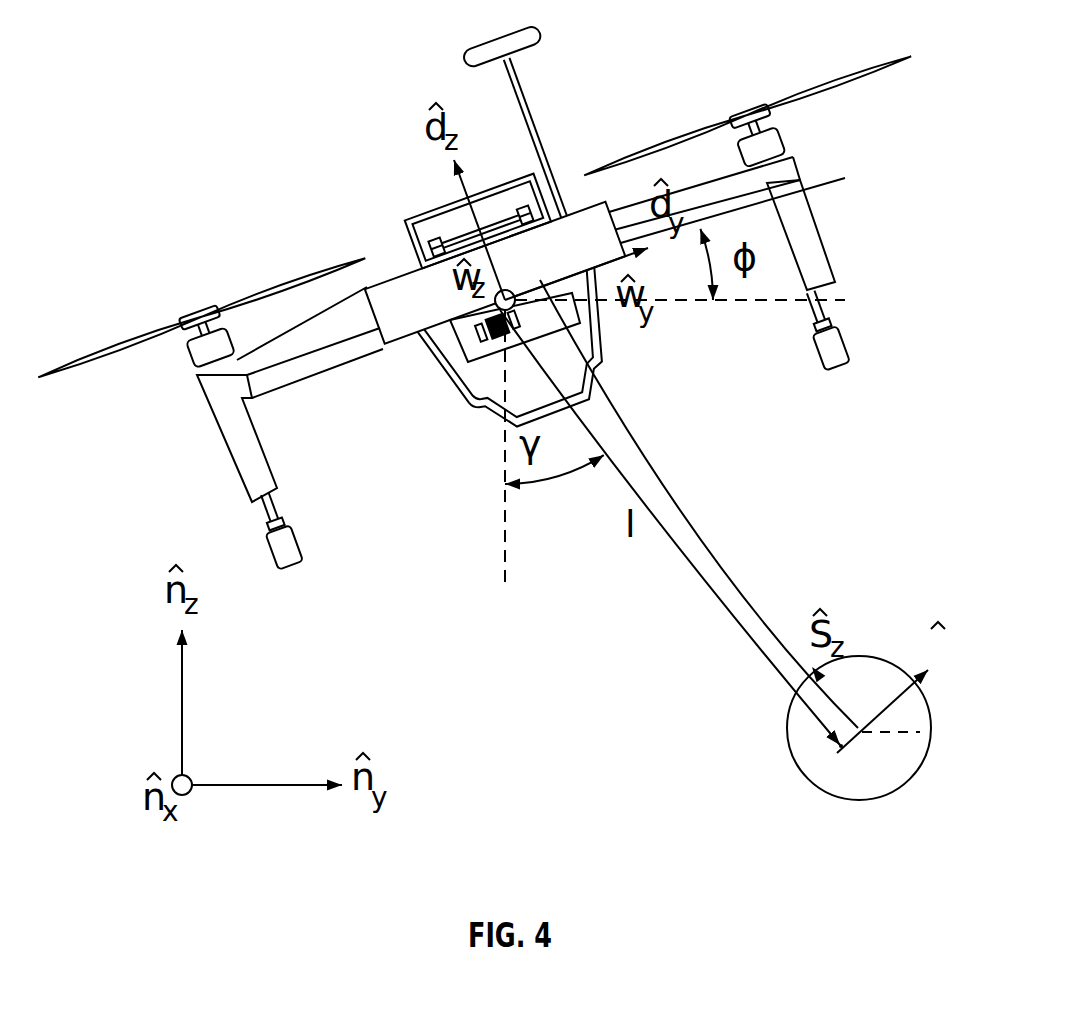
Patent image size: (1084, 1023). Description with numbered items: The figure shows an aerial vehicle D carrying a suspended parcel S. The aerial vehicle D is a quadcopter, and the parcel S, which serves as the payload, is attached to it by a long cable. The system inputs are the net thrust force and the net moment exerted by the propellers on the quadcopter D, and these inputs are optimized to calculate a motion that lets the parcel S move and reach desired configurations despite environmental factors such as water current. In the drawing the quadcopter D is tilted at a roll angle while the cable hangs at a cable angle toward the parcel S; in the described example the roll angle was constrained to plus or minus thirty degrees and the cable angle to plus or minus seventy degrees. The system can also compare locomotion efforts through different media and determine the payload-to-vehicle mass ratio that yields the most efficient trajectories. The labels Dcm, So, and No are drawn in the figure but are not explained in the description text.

The aerial vehicle D is at (208, 413).
The suspended parcel S is at (785, 742).
The drone center of mass Dcm is at (537, 269).
The payload attachment point So is at (866, 760).
The inertial frame origin No is at (257, 712).